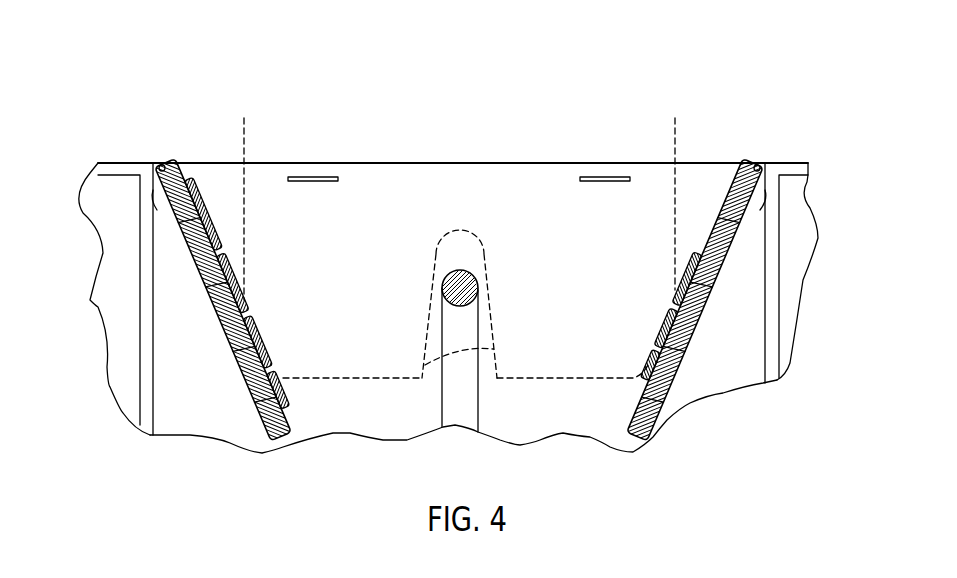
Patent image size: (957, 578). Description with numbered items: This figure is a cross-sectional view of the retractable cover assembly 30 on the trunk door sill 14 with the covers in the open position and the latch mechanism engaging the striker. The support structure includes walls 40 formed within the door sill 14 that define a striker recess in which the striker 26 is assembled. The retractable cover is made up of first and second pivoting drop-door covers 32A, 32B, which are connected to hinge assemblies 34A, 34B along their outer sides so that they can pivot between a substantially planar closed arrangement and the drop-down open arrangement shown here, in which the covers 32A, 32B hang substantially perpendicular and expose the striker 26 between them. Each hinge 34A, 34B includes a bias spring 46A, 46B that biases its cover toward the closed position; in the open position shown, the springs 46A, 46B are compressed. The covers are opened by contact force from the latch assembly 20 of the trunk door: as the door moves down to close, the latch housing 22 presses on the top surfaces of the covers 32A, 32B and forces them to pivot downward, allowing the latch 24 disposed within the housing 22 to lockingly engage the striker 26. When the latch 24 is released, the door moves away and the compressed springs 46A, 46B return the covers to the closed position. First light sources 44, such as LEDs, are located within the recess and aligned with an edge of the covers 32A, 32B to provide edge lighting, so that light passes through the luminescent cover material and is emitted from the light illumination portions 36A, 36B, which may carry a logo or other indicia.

The trunk door sill 14 is at (793, 162).
The latch assembly 20 is at (502, 399).
The latch housing 22 is at (242, 146).
The latch 24 is at (440, 285).
The striker 26 is at (470, 274).
The retractable cover assembly 30 is at (490, 112).
The first pivoting drop-door cover 32A is at (628, 418).
The second pivoting drop-door cover 32B is at (290, 413).
The hinge assembly 34A is at (753, 162).
The hinge assembly 34B is at (160, 165).
The light illumination portion 36A is at (695, 263).
The light illumination portion 36B is at (260, 360).
The walls 40 is at (176, 337).
The first light sources 44 is at (313, 176).
The bias spring 46A is at (755, 205).
The bias spring 46B is at (157, 192).